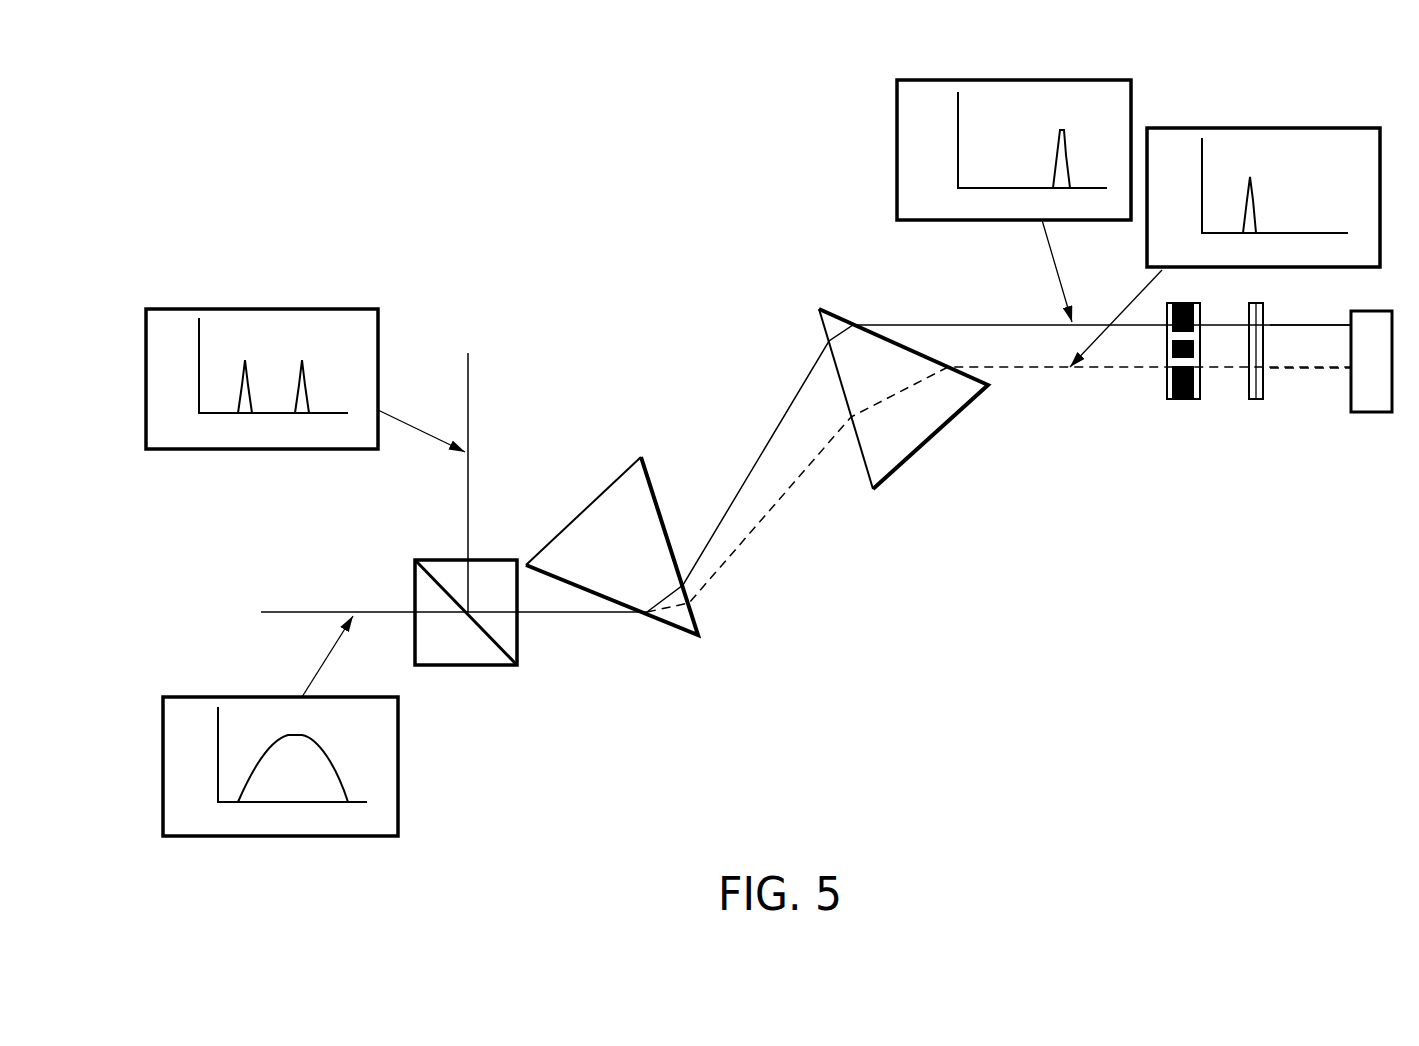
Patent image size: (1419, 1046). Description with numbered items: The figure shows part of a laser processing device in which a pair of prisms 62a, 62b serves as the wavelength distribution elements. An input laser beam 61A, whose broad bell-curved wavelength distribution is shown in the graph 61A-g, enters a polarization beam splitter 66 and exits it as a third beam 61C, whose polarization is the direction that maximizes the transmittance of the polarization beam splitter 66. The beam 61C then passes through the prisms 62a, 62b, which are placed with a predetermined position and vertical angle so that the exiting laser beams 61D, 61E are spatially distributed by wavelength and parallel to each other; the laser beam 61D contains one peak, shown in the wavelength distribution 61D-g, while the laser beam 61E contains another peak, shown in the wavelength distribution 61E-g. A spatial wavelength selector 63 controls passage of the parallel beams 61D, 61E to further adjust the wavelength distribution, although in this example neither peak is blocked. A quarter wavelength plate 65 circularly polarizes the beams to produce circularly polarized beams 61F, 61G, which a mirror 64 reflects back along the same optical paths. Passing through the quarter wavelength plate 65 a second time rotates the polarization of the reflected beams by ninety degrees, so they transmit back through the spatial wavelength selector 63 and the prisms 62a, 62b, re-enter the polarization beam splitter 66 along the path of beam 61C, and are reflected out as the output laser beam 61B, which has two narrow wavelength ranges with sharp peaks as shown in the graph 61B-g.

The input laser beam 61A is at (297, 612).
The output laser beam 61B is at (478, 448).
The third beam 61C is at (582, 613).
The laser beam 61D is at (995, 325).
The laser beam 61E is at (1030, 370).
The circularly polarized beam 61F is at (1313, 325).
The circularly polarized beam 61G is at (1307, 370).
The graph 61A-g is at (398, 772).
The graph 61B-g is at (263, 309).
The wavelength distribution 61D-g is at (1063, 80).
The wavelength distribution 61E-g is at (1313, 128).
The prism 62a is at (678, 610).
The prism 62b is at (888, 458).
The spatial wavelength selector 63 is at (1180, 399).
The mirror 64 is at (1371, 412).
The ¼ wavelength plate 65 is at (1252, 399).
The polarization beam splitter 66 is at (455, 660).